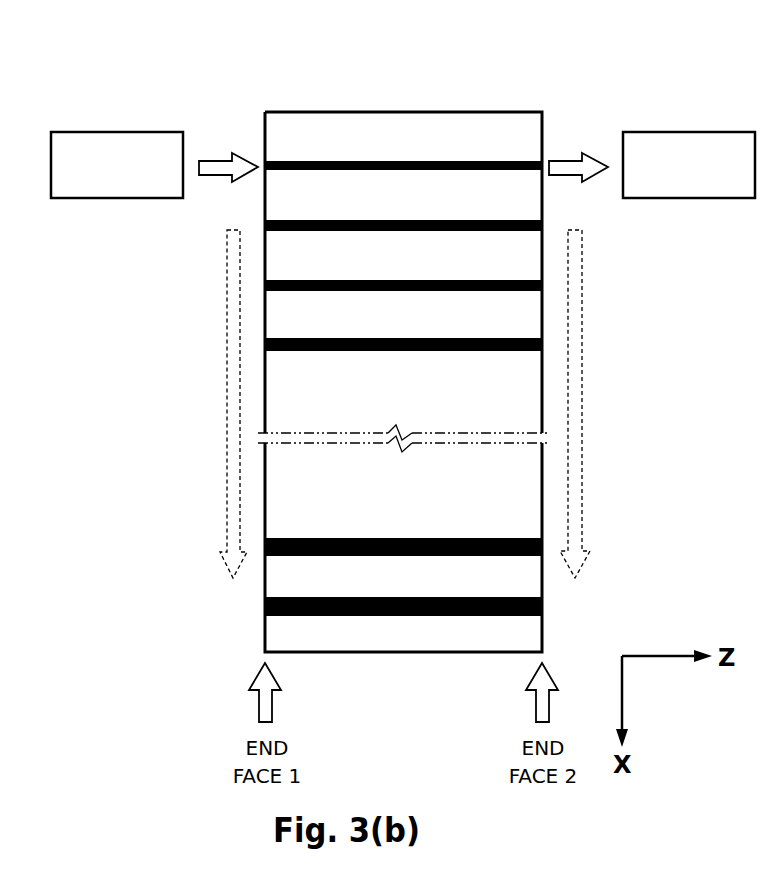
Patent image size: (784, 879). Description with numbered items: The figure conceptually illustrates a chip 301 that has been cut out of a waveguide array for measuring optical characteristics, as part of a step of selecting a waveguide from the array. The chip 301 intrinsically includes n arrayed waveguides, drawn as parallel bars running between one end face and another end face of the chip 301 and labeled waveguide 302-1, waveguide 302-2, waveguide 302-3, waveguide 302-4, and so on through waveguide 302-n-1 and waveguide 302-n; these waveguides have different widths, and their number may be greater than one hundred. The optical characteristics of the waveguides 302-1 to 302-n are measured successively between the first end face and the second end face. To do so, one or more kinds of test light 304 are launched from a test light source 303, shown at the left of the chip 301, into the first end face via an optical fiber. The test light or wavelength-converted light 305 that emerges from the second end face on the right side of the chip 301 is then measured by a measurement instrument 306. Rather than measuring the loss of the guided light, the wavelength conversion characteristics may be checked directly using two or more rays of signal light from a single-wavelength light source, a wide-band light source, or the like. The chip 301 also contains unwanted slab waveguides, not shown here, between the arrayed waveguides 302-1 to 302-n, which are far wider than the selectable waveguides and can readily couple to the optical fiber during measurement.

The chip 301 is at (480, 82).
The waveguide 302-1 is at (377, 163).
The waveguide 302-2 is at (280, 223).
The waveguide 302-3 is at (280, 283).
The waveguide 302-4 is at (280, 343).
The waveguide 302-n-1 is at (280, 538).
The waveguide 302-n is at (282, 603).
The test light source 303 is at (97, 132).
The test light 304 is at (213, 162).
The test light or wavelength-converted light 305 is at (575, 162).
The measurement instrument 306 is at (693, 132).